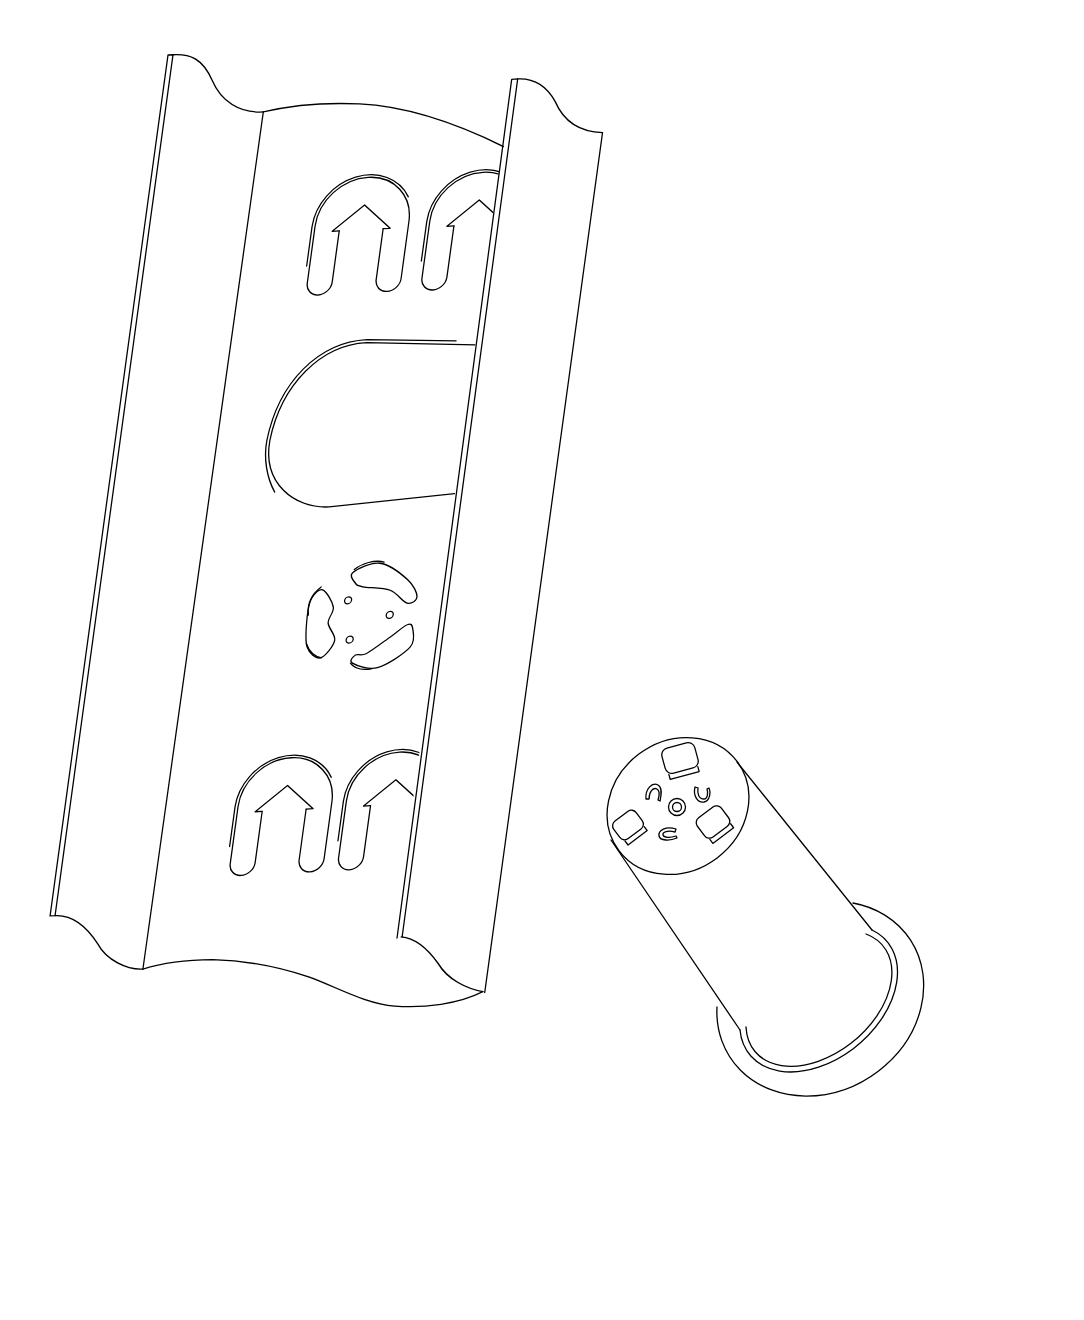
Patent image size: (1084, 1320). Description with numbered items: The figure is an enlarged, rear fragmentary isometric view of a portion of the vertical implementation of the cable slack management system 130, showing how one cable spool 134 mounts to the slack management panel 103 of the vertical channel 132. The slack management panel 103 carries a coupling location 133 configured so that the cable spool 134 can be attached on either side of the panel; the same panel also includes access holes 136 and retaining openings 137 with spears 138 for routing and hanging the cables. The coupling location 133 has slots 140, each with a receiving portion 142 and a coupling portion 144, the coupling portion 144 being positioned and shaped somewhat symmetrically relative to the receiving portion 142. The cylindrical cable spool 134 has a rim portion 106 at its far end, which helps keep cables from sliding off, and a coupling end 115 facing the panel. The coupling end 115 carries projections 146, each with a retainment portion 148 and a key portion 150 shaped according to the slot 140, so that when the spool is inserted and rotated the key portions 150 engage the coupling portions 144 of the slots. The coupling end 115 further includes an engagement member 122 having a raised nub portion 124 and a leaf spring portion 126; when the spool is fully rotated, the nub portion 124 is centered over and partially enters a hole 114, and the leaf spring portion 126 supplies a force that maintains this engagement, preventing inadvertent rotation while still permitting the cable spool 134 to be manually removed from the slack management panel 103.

The cable slack management system 130 is at (742, 72).
The slack management panel 103 is at (432, 140).
The vertical channel 132 is at (498, 536).
The coupling location 133 is at (361, 616).
The cable spool 134 is at (713, 958).
The access hole 136 is at (368, 422).
The retaining opening 137 is at (362, 218).
The spear 138 is at (359, 233).
The slot 140 is at (361, 616).
The receiving portion 142 is at (313, 651).
The coupling portion 144 is at (321, 622).
The hole 114 is at (348, 600).
The coupling end 115 is at (718, 765).
The engagement member 122 is at (606, 754).
The nub portion 124 is at (606, 754).
The leaf spring portion 126 is at (650, 796).
The projection 146 is at (674, 849).
The retainment portion 148 is at (674, 849).
The key portion 150 is at (628, 812).
The rim portion 106 is at (800, 1098).